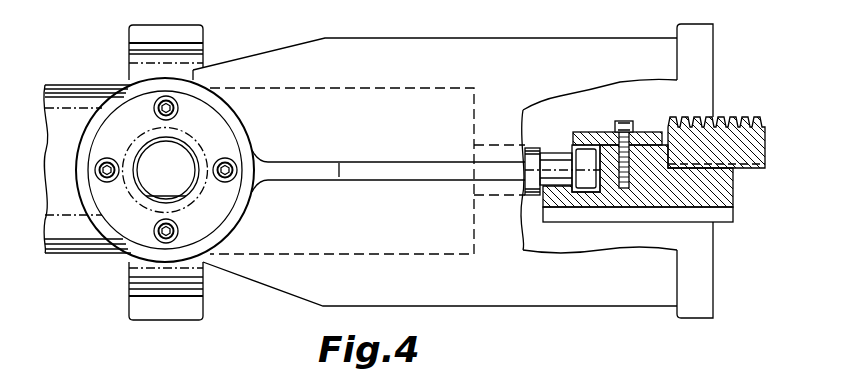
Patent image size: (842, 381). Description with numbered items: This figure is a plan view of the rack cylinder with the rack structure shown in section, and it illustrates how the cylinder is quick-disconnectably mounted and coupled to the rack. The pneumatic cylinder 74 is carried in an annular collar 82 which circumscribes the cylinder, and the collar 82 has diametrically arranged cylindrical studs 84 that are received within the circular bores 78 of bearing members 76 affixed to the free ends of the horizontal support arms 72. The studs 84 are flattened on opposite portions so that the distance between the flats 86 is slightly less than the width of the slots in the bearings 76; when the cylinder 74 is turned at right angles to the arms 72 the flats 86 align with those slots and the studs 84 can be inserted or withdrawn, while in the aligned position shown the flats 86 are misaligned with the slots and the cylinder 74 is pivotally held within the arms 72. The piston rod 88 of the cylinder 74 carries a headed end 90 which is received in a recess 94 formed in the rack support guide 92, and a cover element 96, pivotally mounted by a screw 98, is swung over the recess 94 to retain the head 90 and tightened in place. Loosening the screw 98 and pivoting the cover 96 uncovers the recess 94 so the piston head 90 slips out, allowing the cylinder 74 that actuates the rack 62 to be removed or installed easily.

The rack 62 is at (736, 119).
The support arms 72 is at (557, 302).
The pneumatic cylinder 74 is at (398, 259).
The bearing member 76 is at (226, 136).
The circular bore 78 is at (190, 194).
The annular collar 82 is at (184, 33).
The cylindrical studs 84 is at (148, 184).
The flats 86 is at (175, 147).
The piston rod 88 is at (500, 198).
The headed end 90 is at (573, 148).
The rack support guide 92 is at (657, 202).
The recess 94 is at (601, 195).
The cover element 96 is at (590, 133).
The screw 98 is at (626, 121).